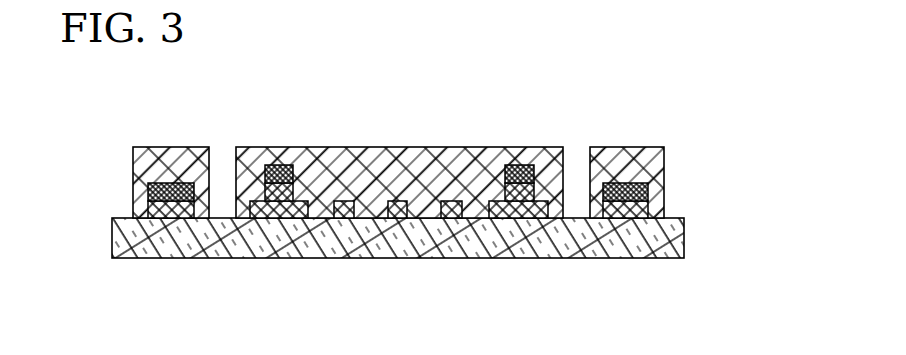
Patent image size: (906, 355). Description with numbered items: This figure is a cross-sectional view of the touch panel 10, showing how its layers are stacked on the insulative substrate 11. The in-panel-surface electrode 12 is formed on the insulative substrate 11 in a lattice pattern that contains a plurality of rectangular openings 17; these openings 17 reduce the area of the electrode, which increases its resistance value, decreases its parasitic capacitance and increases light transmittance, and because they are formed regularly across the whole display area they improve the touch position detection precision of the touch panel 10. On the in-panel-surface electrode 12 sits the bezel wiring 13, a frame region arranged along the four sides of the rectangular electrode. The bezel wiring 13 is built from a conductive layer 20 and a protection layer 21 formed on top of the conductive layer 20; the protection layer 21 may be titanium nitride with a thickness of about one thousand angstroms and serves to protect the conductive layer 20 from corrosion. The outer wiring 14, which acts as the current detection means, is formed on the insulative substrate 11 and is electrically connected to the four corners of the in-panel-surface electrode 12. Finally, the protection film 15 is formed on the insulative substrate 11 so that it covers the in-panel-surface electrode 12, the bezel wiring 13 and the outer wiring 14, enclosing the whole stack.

The touch panel 10 is at (398, 114).
The insulative substrate 11 is at (118, 242).
The in-panel-surface electrode 12 is at (262, 192).
The bezel wiring 13 is at (279, 162).
The outer wiring 14 is at (166, 180).
The protection film 15 is at (200, 157).
The opening 17 is at (321, 195).
The conductive layer 20 is at (147, 211).
The protection layer 21 is at (147, 188).